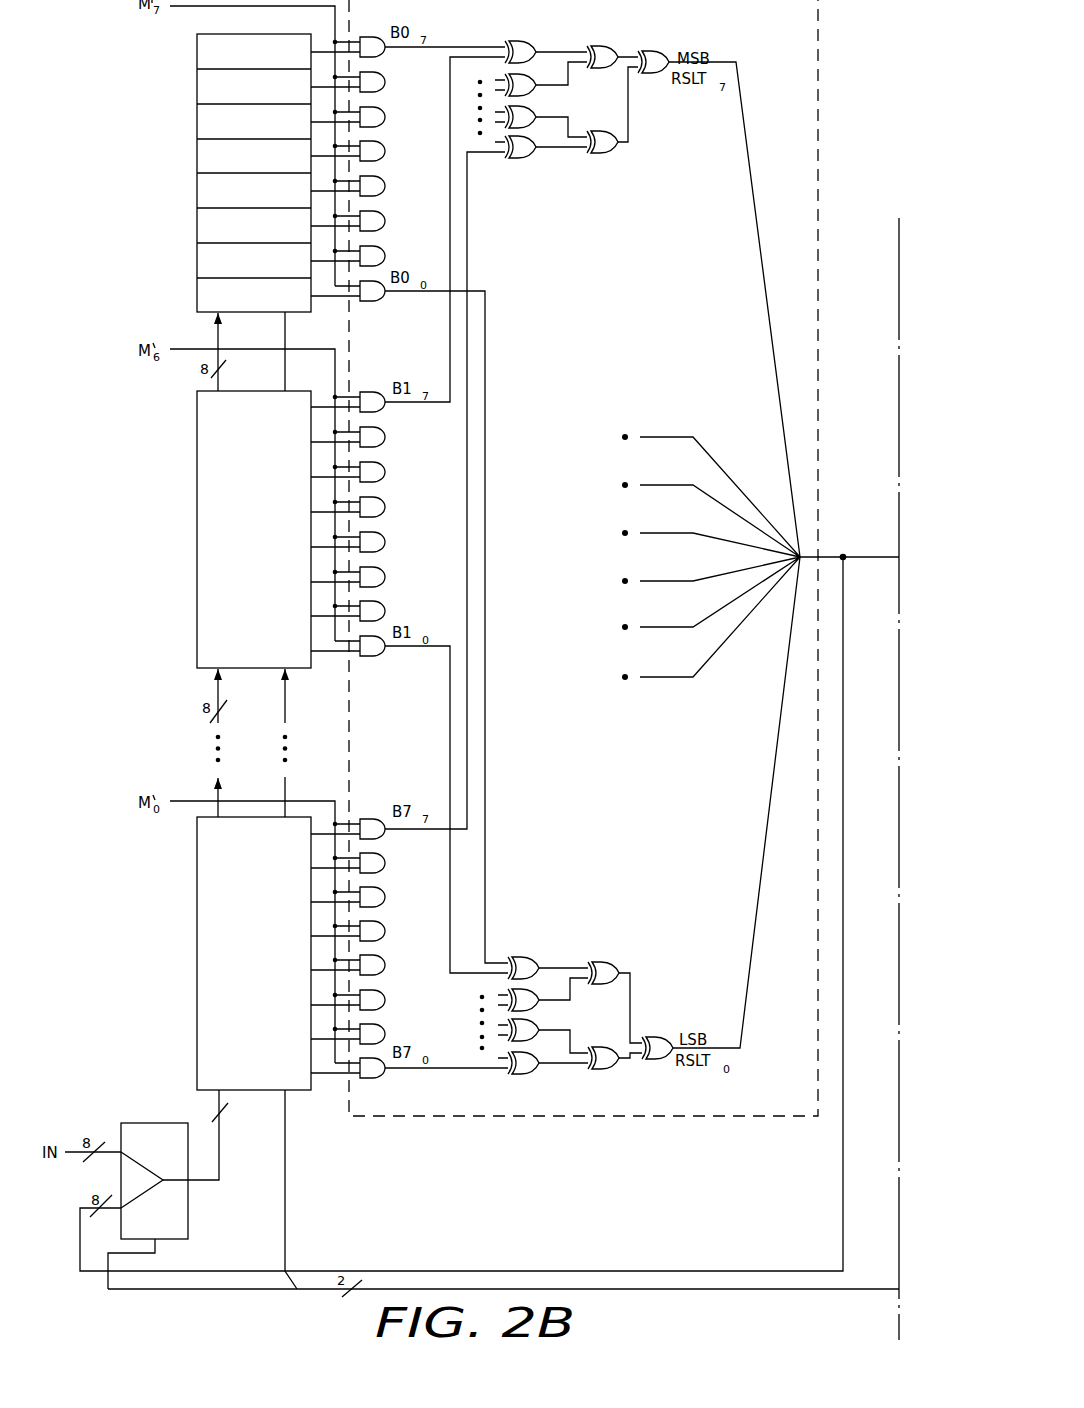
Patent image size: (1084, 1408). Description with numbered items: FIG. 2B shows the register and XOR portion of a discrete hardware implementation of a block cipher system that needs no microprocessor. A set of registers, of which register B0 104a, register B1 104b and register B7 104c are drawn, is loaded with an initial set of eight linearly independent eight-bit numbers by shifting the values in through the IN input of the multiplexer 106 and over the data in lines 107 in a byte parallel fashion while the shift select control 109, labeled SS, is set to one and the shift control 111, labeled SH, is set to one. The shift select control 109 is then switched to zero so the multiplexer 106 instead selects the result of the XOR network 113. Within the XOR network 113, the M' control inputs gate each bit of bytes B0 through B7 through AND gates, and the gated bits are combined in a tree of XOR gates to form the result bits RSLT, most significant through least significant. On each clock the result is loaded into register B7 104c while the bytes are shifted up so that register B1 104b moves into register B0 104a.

The register B0 104a is at (197, 95).
The register B1 104b is at (197, 526).
The register B7 104c is at (197, 943).
The multiplexer 106 is at (160, 1122).
The data in lines 107 is at (223, 1157).
The shift select control 109 is at (133, 1255).
The shift control 111 is at (286, 1183).
The XOR network 113 is at (446, 1120).